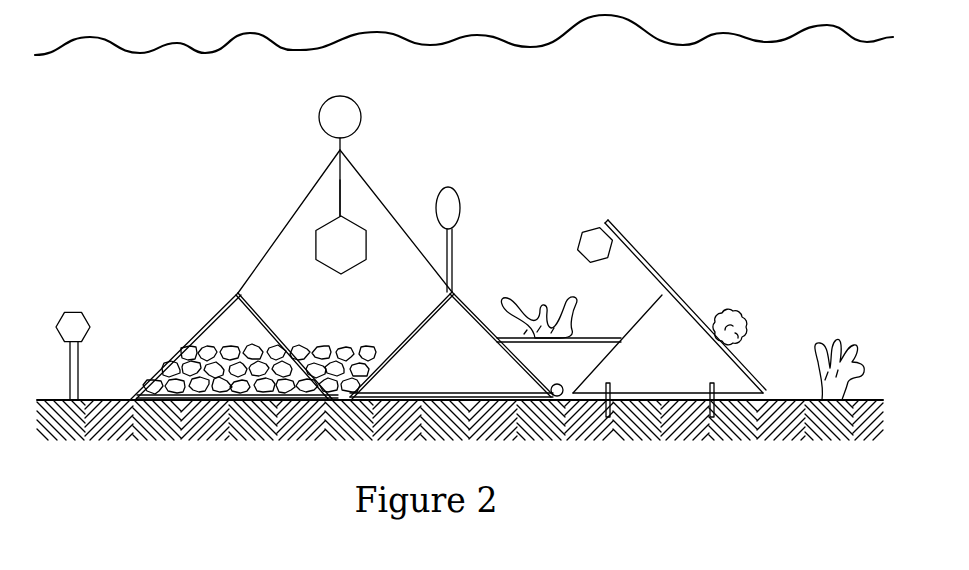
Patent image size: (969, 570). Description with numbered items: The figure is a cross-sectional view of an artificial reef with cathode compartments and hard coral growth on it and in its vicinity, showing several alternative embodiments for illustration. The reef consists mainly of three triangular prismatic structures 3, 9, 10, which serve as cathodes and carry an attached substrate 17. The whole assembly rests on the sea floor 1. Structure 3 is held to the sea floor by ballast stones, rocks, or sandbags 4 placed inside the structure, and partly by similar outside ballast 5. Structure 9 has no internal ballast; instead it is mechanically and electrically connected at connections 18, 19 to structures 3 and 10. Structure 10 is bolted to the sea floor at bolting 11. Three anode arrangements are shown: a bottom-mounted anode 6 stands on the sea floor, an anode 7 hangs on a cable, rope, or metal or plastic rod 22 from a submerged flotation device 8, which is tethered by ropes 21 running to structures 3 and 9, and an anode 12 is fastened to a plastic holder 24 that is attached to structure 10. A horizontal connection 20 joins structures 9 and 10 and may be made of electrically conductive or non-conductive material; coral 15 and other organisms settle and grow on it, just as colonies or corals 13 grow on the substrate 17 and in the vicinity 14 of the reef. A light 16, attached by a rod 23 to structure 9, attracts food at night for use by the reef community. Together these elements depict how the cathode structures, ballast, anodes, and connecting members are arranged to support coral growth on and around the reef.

The sea floor 1 is at (63, 407).
The triangular prismatic structure 3 is at (210, 315).
The ballast stones, rocks, or sandbags 4 is at (160, 382).
The outside ballast 5 is at (352, 342).
The bottom-mounted anode 6 is at (70, 320).
The suspended anode 7 is at (347, 252).
The submerged flotation device 8 is at (347, 115).
The triangular prismatic structure 9 is at (447, 327).
The triangular prismatic structure 10 is at (683, 333).
The sea floor bolting 11 is at (612, 388).
The anode 12 is at (597, 242).
The colonies or corals 13 is at (760, 322).
The vicinity 14 is at (847, 345).
The coral 15 is at (580, 302).
The light 16 is at (450, 205).
The substrate 17 is at (258, 304).
The connection 18 is at (372, 387).
The connection 19 is at (557, 385).
The horizontal connection 20 is at (583, 337).
The ropes 21 is at (292, 218).
The cable, rope, or rod 22 is at (342, 195).
The rod 23 is at (453, 258).
The plastic holder 24 is at (640, 262).